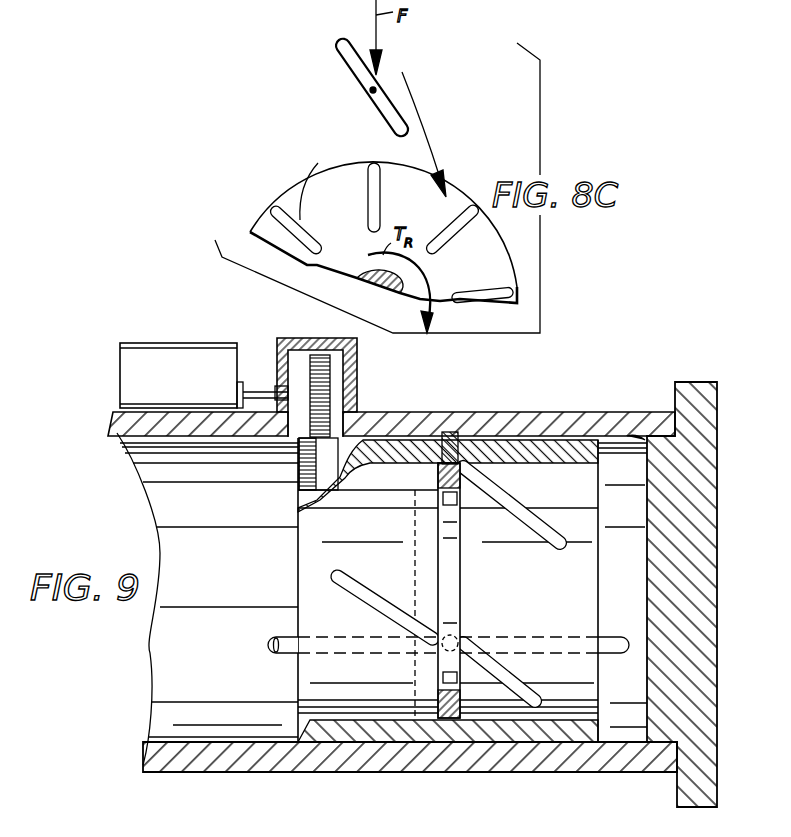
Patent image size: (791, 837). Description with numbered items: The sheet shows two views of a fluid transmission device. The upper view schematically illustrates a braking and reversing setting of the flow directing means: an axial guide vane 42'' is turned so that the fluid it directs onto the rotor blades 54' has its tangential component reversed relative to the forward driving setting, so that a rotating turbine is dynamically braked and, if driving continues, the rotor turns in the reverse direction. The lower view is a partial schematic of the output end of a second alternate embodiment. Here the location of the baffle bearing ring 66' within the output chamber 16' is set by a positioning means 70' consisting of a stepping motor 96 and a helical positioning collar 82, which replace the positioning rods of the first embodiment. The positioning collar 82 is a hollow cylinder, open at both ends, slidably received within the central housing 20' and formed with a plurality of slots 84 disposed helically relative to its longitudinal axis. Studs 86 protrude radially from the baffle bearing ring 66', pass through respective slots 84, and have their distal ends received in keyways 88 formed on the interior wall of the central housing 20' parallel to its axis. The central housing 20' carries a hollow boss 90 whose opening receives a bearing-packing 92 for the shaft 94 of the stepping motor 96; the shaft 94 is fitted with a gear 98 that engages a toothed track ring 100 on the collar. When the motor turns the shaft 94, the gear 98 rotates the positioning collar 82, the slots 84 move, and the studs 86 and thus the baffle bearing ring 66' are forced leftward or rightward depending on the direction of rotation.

In FIG. 8C, the axial guide vane 42'' is at (339, 87).
In FIG. 8C, the rotor blades 54' is at (390, 222).
In FIG. 9, the positioning means 70' is at (217, 311).
In FIG. 9, the stepping motor 96 is at (172, 362).
In FIG. 9, the shaft 94 is at (262, 397).
In FIG. 9, the bearing-packing 92 is at (273, 387).
In FIG. 9, the hollow boss 90 is at (357, 356).
In FIG. 9, the gear 98 is at (317, 390).
In FIG. 9, the toothed track ring 100 is at (316, 466).
In FIG. 9, the keyway 88 is at (270, 647).
In FIG. 9, the studs 86 is at (457, 430).
In FIG. 9, the central housing 20' is at (412, 592).
In FIG. 9, the helical positioning collar 82 is at (556, 450).
In FIG. 9, the slots 84 is at (393, 560).
In FIG. 9, the baffle bearing ring 66' is at (408, 590).
In FIG. 9, the output chamber 16' is at (382, 599).